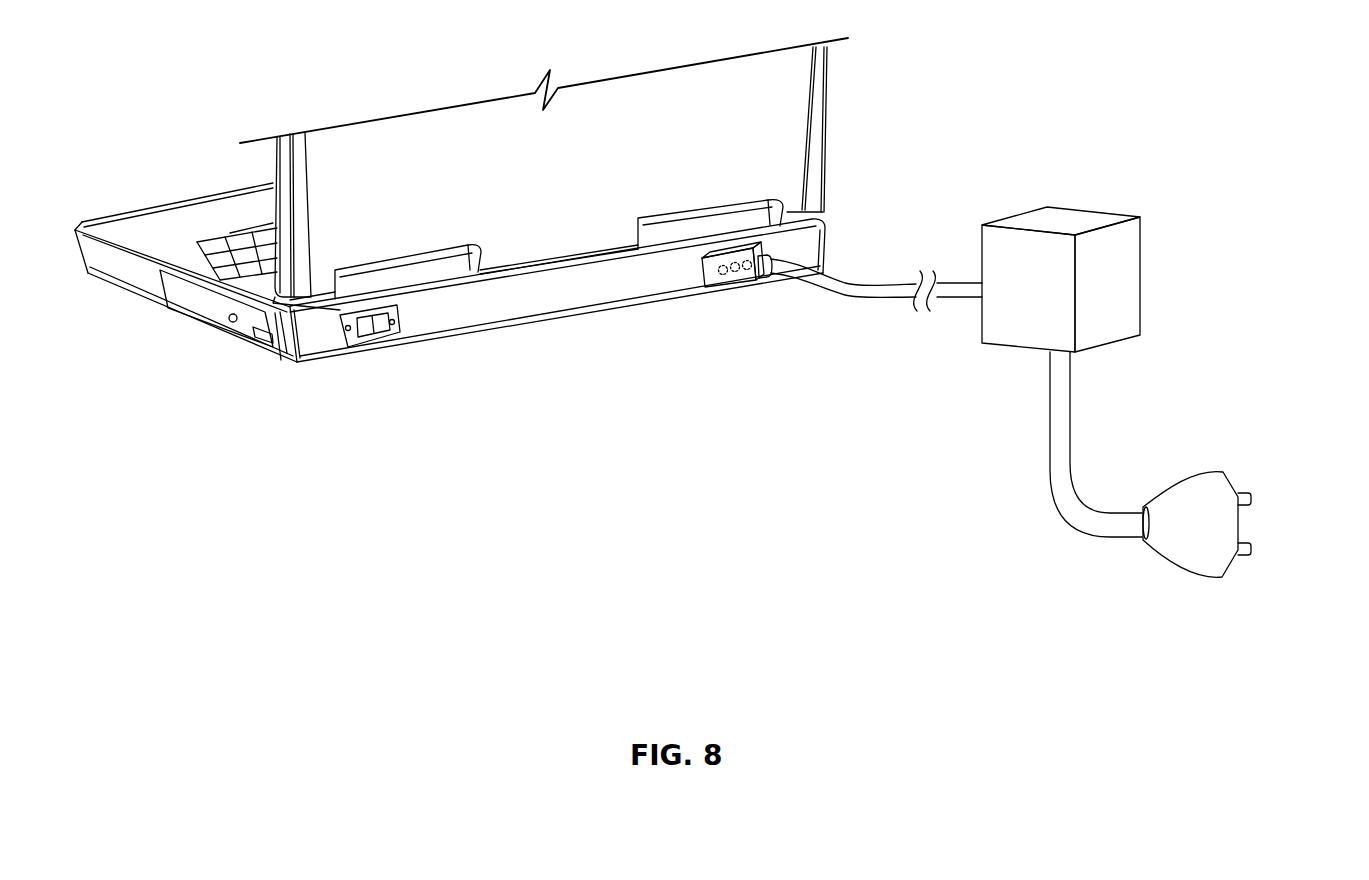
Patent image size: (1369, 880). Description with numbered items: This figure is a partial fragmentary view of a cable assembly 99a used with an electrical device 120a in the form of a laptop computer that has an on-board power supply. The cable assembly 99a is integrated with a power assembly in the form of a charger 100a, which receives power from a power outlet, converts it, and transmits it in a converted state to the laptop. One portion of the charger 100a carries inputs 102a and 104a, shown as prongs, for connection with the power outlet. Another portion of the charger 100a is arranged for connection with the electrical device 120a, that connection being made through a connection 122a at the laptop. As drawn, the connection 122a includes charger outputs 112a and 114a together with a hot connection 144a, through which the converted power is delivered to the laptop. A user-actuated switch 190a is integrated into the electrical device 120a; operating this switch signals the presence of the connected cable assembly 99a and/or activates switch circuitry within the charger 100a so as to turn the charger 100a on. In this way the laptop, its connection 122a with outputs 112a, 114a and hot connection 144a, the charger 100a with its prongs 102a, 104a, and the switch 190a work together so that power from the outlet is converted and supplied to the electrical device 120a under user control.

The cable assembly 99a is at (1069, 376).
The charger 100a is at (1140, 282).
The input 102a is at (1246, 485).
The input 104a is at (1243, 566).
The charger output 112a is at (733, 288).
The charger output 114a is at (740, 290).
The electrical device 120a is at (838, 131).
The connection 122a is at (506, 318).
The hot connection 144a is at (750, 292).
The user-actuated switch 190a is at (400, 320).